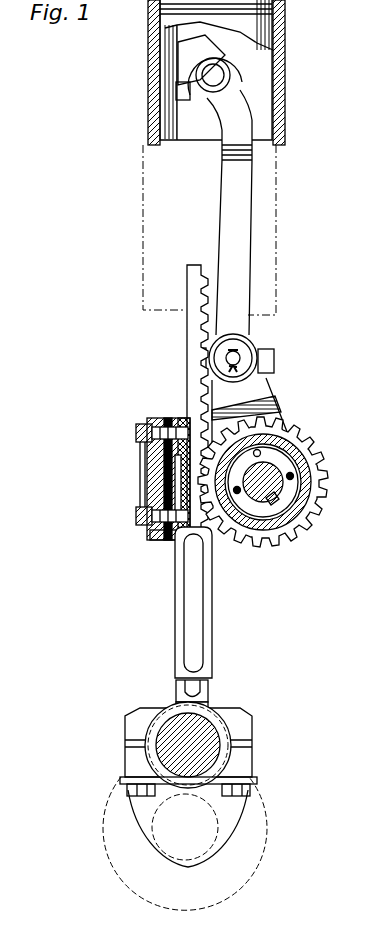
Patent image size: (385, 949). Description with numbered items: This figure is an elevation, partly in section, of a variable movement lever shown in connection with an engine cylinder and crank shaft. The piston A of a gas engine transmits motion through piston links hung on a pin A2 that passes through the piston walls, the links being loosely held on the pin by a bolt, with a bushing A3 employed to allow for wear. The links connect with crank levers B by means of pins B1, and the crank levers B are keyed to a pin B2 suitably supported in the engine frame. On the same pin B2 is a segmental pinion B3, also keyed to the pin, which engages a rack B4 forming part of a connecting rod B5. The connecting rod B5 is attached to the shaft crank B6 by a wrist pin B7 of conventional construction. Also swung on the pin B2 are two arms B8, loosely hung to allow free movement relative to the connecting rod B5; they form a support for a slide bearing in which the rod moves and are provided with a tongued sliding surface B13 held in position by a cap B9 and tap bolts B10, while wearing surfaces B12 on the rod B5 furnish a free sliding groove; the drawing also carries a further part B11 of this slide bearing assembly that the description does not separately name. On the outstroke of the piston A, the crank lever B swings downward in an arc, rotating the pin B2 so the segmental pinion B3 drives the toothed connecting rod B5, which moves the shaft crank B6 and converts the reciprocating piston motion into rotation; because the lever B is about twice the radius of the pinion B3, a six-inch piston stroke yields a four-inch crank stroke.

The piston A is at (285, 27).
The pin A2 is at (228, 70).
The bushing A3 is at (148, 98).
The crank lever B is at (265, 392).
The pin B1 is at (240, 356).
The pin B2 is at (270, 476).
The segmental pinion B3 is at (330, 478).
The rack B4 is at (188, 336).
The connecting rod B5 is at (200, 587).
The shaft crank B6 is at (236, 806).
The wrist pin B7 is at (215, 736).
The arm B8 is at (176, 548).
The cap B9 is at (150, 540).
The tap bolt B10 is at (135, 432).
The bolt B11 is at (140, 473).
The wearing surface B12 is at (180, 562).
The tongued sliding surface B13 is at (168, 420).